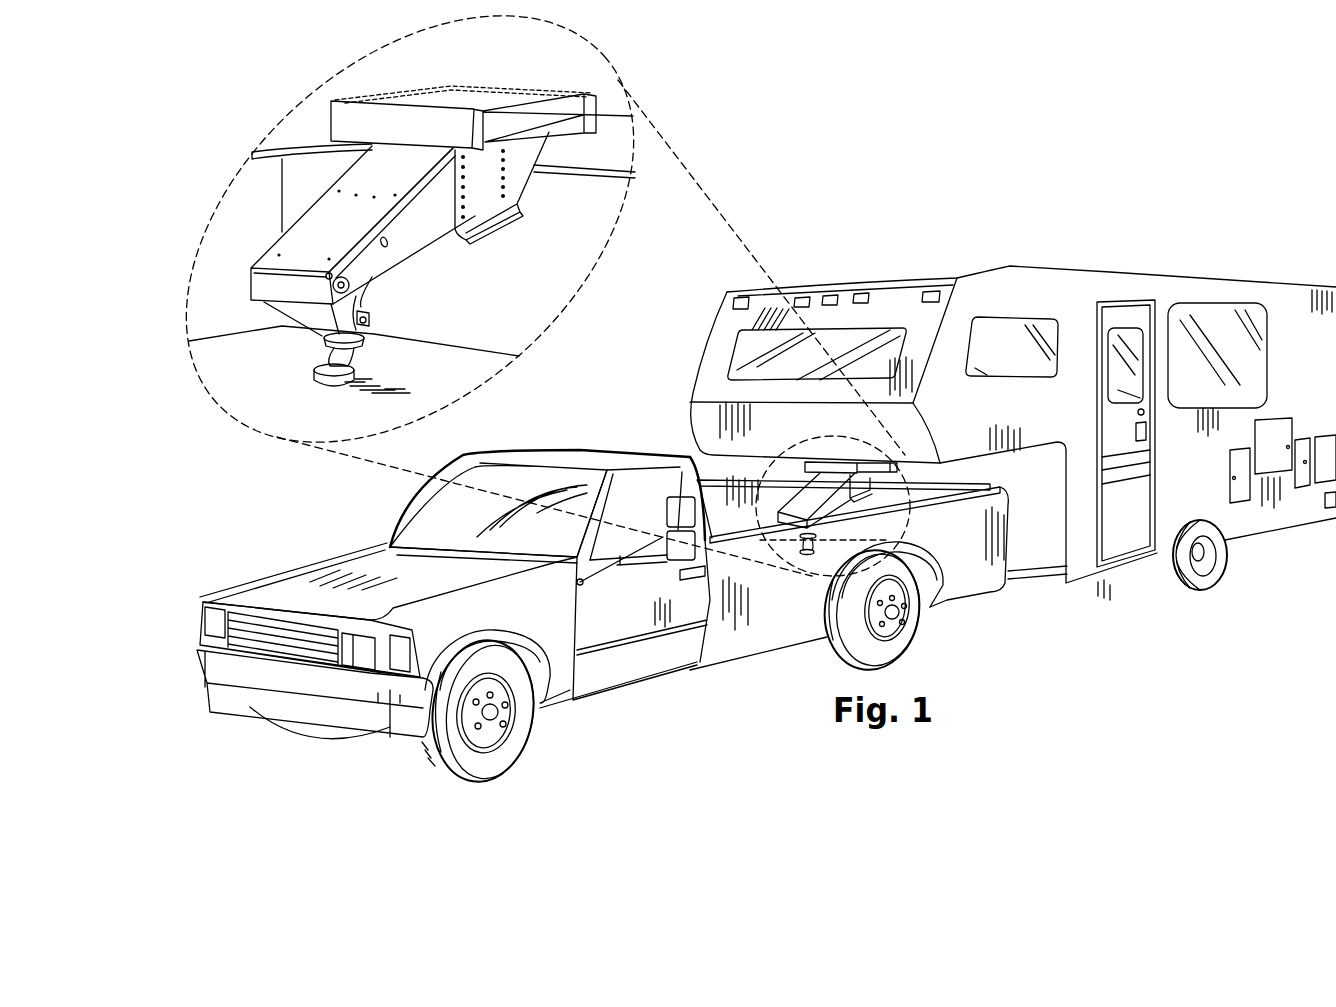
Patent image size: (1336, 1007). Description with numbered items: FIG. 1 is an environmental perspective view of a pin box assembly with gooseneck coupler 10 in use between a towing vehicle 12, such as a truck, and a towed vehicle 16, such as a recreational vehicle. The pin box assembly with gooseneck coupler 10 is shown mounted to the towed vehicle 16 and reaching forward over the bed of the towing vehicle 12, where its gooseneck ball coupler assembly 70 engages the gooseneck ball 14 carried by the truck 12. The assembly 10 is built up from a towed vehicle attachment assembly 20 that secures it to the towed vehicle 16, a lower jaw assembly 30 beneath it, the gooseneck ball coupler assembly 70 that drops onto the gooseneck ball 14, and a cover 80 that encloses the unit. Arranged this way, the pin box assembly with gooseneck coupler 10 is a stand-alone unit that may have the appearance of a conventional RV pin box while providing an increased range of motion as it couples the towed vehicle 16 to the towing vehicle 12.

The pin box assembly with gooseneck coupler 10 is at (296, 94).
The towing vehicle 12 is at (770, 617).
The gooseneck ball 14 is at (346, 356).
The towed vehicle 16 is at (1077, 294).
The towed vehicle attachment assembly 20 is at (532, 184).
The lower jaw assembly 30 is at (432, 257).
The gooseneck ball coupler assembly 70 is at (309, 360).
The cover 80 is at (331, 217).